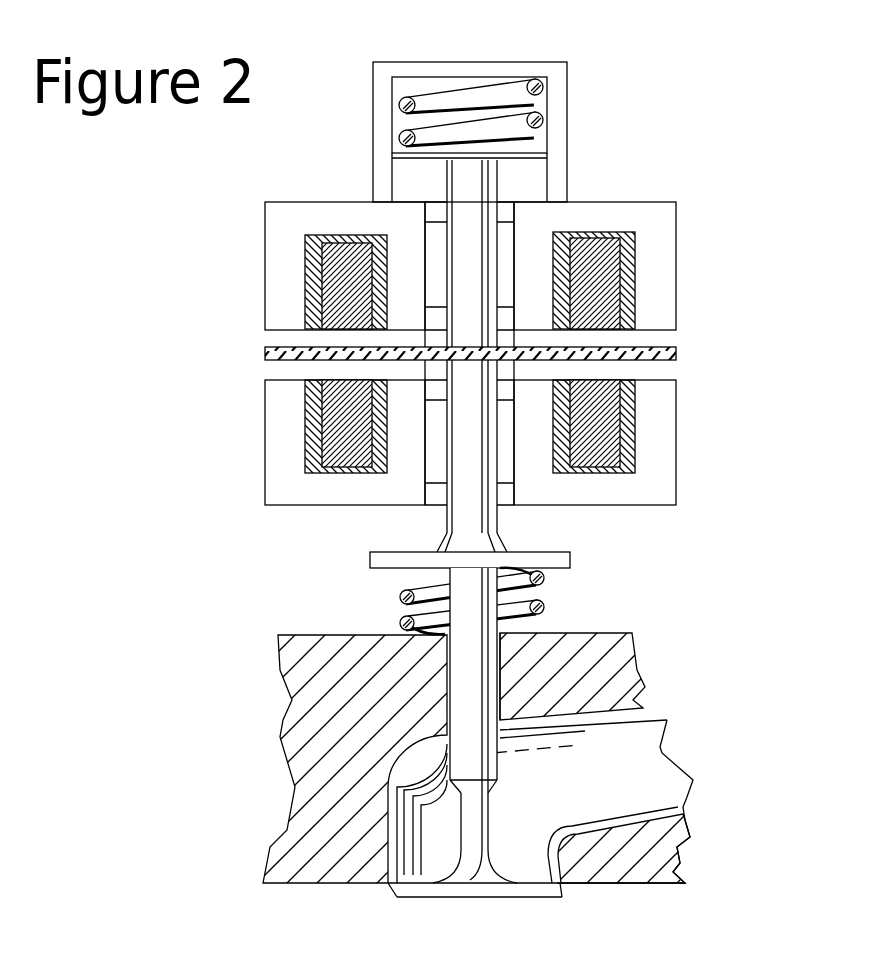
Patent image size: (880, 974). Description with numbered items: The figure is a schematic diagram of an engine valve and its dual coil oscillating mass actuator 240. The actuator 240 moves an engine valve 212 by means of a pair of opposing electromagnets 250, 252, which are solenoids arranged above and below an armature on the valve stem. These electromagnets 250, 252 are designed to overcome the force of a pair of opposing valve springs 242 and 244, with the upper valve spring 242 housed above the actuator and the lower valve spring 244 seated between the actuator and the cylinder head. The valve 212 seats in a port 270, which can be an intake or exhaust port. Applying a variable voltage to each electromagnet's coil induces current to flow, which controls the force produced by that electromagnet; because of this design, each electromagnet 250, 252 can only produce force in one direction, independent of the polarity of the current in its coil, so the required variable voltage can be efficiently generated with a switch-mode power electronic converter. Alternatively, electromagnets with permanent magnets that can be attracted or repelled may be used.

The valve 212 is at (472, 820).
The dual coil oscillating mass actuator 240 is at (764, 378).
The valve spring 242 is at (503, 90).
The valve spring 244 is at (545, 607).
The electromagnet 250 is at (663, 231).
The electromagnet 252 is at (663, 495).
The port 270 is at (647, 768).